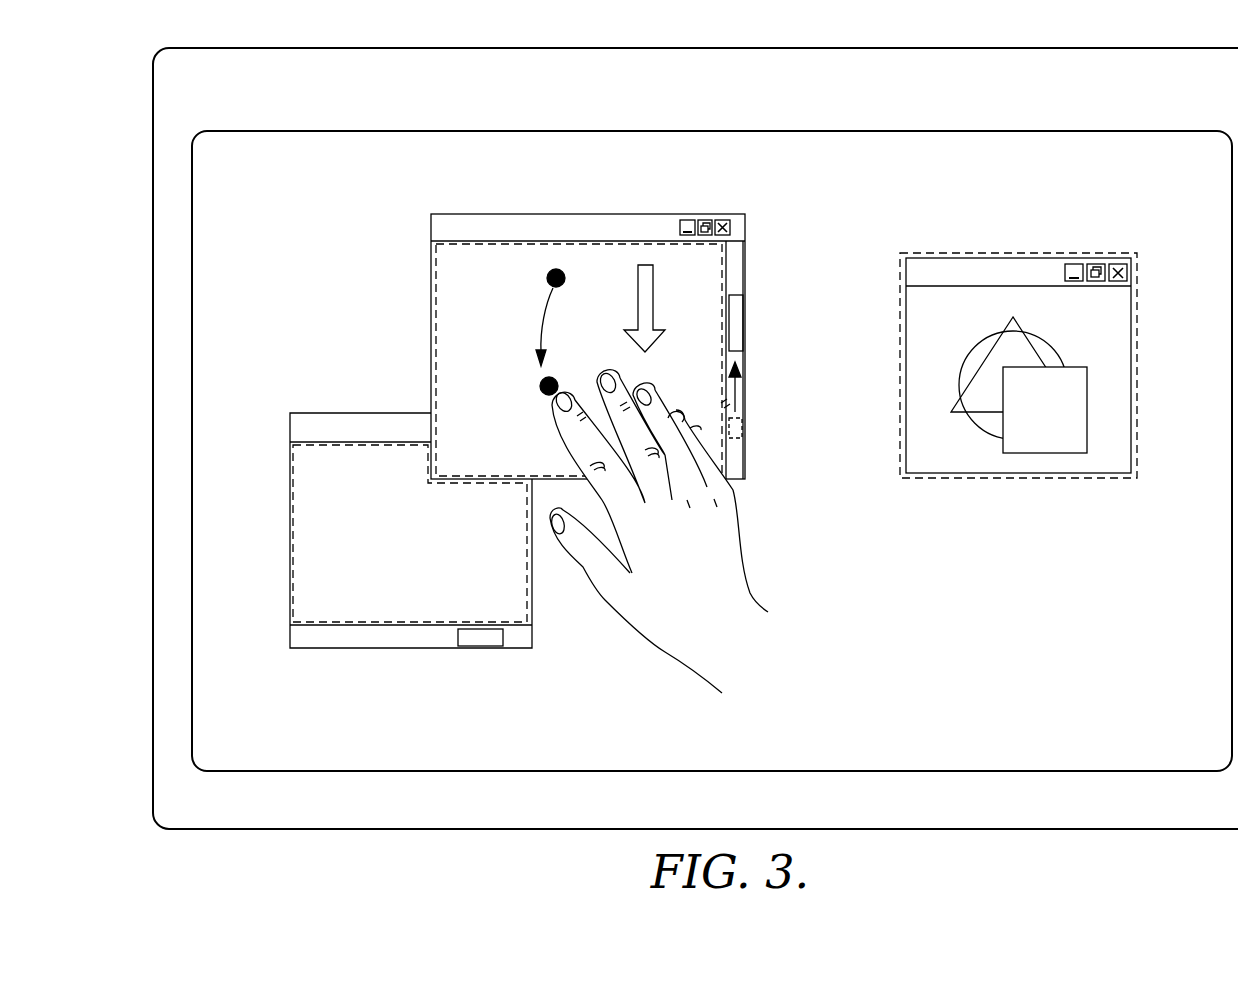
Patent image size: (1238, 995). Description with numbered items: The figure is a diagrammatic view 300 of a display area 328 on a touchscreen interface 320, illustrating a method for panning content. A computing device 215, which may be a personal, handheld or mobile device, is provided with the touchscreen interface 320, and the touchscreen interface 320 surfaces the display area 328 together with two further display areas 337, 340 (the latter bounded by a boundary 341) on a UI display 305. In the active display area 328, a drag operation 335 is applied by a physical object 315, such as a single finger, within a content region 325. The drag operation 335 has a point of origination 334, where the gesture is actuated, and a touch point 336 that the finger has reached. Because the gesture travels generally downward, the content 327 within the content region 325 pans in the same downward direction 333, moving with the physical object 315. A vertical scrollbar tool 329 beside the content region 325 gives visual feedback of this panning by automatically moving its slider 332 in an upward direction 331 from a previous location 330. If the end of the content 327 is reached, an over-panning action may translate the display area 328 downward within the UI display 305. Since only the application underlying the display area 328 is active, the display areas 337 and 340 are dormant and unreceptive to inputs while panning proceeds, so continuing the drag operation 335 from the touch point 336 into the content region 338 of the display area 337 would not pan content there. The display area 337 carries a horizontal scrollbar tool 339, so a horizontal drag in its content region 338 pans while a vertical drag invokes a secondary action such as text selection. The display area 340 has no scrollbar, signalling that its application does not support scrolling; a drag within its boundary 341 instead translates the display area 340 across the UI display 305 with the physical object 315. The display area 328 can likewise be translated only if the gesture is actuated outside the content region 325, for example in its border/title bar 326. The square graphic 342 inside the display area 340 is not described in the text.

The diagrammatic view 300 is at (95, 122).
The UI display 305 is at (317, 153).
The computing device 215 is at (702, 115).
The touchscreen interface 320 is at (688, 190).
The physical object 315 is at (653, 660).
The content region 325 is at (488, 243).
The border/title bar 326 is at (548, 222).
The content 327 is at (450, 325).
The display area 328 is at (745, 250).
The scrollbar tool 329 is at (740, 285).
The previous location 330 is at (743, 430).
The upward direction 331 is at (730, 386).
The slider 332 is at (726, 310).
The direction 333 is at (655, 278).
The point of origination 334 is at (566, 278).
The drag operation 335 is at (538, 313).
The touch point 336 is at (540, 385).
The display area 337 is at (370, 413).
The content region 338 is at (292, 481).
The horizontal scrollbar tool 339 is at (420, 648).
The display area 340 is at (1008, 268).
The boundary 341 is at (900, 355).
The square graphic object 342 is at (1087, 395).